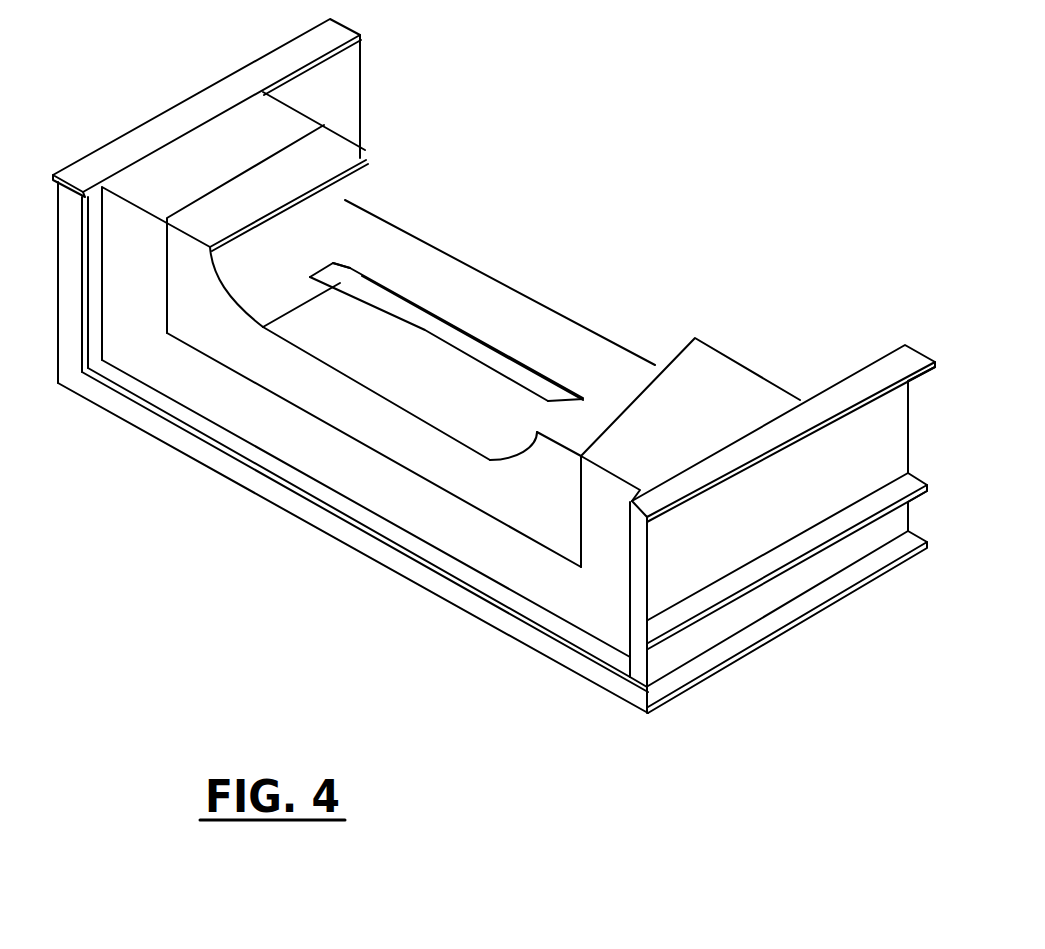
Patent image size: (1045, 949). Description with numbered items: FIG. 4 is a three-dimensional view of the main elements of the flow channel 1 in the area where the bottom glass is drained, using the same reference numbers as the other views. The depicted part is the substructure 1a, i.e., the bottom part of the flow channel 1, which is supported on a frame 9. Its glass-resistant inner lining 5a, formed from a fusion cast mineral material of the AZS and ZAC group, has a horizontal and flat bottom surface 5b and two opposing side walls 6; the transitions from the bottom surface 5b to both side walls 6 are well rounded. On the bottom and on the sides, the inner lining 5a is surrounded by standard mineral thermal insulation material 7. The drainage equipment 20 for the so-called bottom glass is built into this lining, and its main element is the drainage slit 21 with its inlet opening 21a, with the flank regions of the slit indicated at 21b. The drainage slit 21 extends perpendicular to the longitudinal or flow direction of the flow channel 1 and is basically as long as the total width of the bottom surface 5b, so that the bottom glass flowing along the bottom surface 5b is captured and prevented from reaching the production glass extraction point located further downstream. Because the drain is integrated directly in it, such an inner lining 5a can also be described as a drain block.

The flow channel 1 is at (695, 72).
The substructure 1a is at (282, 588).
The inner lining 5a is at (313, 160).
The bottom surface 5b is at (507, 322).
The side walls 6 is at (335, 234).
The thermal insulation material 7 is at (132, 293).
The frame 9 is at (205, 107).
The drainage equipment 20 is at (582, 317).
The drainage slit 21 is at (428, 332).
The inlet opening 21a is at (468, 314).
The second flank 21b is at (351, 290).